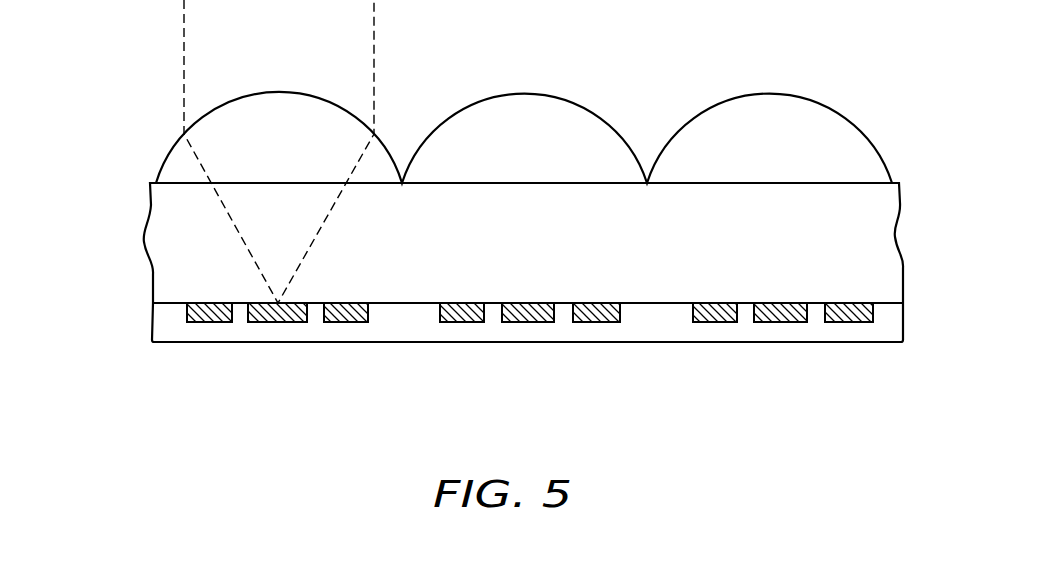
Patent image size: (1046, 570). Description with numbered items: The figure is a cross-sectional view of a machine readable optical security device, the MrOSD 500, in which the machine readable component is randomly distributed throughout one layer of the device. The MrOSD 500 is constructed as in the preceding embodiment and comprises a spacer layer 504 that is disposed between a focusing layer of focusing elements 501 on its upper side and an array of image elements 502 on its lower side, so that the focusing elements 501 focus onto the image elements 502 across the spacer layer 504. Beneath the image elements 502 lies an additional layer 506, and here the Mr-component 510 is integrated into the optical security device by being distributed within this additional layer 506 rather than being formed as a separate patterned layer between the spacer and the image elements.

The MrOSD 500 is at (153, 87).
The focusing elements 501 is at (522, 88).
The image elements 502 is at (352, 325).
The spacer layer 504 is at (912, 255).
The additional layer 506 is at (150, 328).
The Mr-component 510 is at (173, 345).